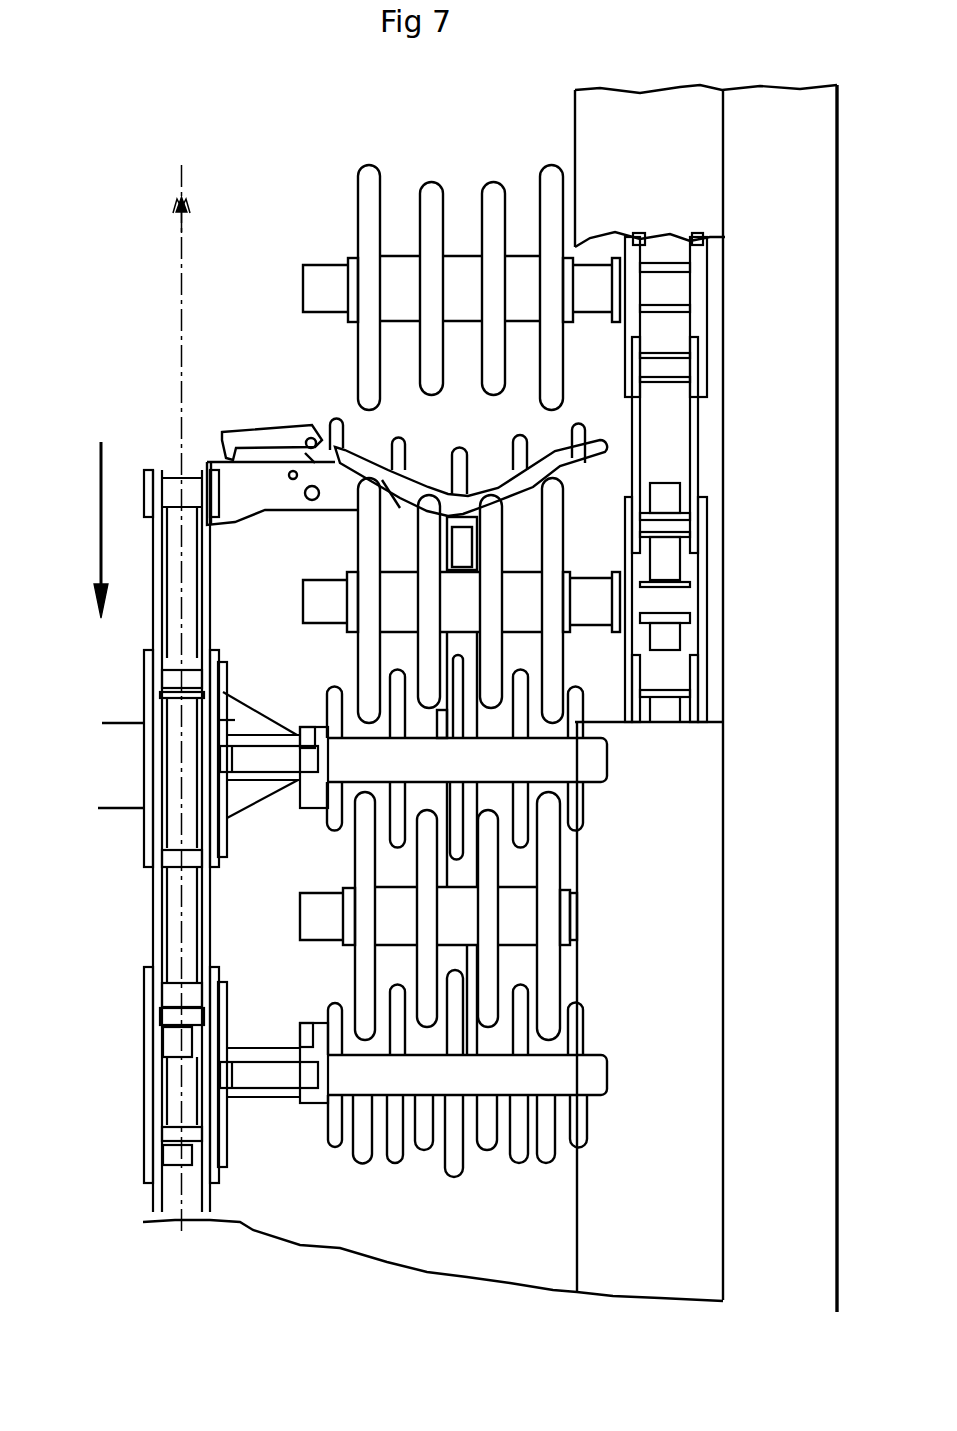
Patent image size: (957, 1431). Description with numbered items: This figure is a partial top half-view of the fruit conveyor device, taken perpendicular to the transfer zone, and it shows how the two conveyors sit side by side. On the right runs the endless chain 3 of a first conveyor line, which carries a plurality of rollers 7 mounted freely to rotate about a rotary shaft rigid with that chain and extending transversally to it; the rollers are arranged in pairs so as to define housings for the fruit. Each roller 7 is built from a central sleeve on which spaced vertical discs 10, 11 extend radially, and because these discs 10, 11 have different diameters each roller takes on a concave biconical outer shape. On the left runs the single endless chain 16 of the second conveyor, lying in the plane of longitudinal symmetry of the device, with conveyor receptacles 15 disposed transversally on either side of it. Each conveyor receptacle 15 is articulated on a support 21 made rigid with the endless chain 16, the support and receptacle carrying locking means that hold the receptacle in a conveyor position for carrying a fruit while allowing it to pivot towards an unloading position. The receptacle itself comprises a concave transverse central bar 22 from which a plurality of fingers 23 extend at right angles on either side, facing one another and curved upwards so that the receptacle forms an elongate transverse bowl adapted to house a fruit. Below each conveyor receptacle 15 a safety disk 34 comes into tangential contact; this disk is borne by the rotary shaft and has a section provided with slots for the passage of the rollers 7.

The roller 7 is at (353, 250).
The endless chain 3 is at (700, 317).
The conveyor receptacle 15 is at (375, 442).
The endless chain 16 is at (148, 798).
The support 21 is at (233, 718).
The transverse central bar 22 is at (607, 758).
The finger 23 is at (520, 823).
The disk 34 is at (463, 880).
The disc 10 is at (545, 888).
The disc 11 is at (487, 980).